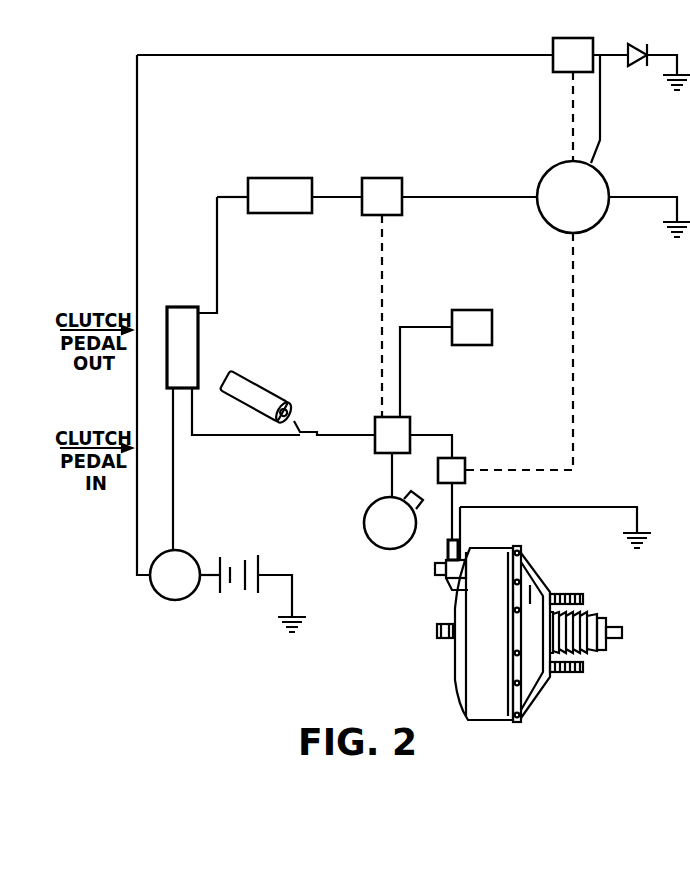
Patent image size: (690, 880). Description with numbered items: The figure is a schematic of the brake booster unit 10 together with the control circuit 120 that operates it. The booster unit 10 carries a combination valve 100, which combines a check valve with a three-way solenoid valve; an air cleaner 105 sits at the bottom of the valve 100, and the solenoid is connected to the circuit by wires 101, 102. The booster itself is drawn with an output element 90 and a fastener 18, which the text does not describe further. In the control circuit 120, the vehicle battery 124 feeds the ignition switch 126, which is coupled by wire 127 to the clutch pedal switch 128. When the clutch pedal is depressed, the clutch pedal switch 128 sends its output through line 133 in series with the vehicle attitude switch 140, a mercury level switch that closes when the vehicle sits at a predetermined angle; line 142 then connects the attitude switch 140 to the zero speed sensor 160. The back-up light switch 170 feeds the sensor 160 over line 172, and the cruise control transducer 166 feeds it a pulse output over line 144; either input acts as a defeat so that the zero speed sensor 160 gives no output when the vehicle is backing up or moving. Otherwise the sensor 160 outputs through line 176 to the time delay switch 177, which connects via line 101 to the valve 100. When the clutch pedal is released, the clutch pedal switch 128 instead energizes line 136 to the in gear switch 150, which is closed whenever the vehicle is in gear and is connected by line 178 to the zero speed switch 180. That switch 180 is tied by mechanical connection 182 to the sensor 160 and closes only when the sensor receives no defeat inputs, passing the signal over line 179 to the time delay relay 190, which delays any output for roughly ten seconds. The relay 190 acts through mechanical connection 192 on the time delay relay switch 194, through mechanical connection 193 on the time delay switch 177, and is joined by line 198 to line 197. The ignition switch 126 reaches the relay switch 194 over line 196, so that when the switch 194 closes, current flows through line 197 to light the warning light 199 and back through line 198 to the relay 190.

The booster unit 10 is at (504, 627).
The mounting nut 18 is at (437, 639).
The output push rod 90 is at (620, 630).
The combination valve 100 is at (440, 553).
The wire 101 is at (455, 500).
The wire 102 is at (546, 507).
The air cleaner 105 is at (440, 593).
The control circuit 120 is at (265, 686).
The battery 124 is at (262, 572).
The ignition switch 126 is at (183, 592).
The wire 127 is at (174, 504).
The clutch pedal switch 128 is at (175, 310).
The line 133 is at (251, 437).
The line 136 is at (217, 196).
The vehicle attitude switch 140 is at (240, 380).
The line 142 is at (333, 437).
The line 144 is at (392, 480).
The in gear switch 150 is at (292, 178).
The zero speed sensor 160 is at (378, 417).
The cruise control transducer 166 is at (370, 538).
The back-up light switch 170 is at (485, 317).
The line 172 is at (422, 329).
The line 176 is at (432, 433).
The time delay switch 177 is at (465, 459).
The line 178 is at (333, 199).
The line 179 is at (481, 196).
The zero speed switch 180 is at (417, 165).
The mechanical connection 182 is at (384, 252).
The time delay relay 190 is at (598, 172).
The mechanical connection 192 is at (573, 104).
The mechanical connection 193 is at (573, 323).
The time delay relay switch 194 is at (553, 47).
The line 196 is at (460, 53).
The line 197 is at (607, 58).
The line 198 is at (600, 137).
The warning light 199 is at (648, 62).